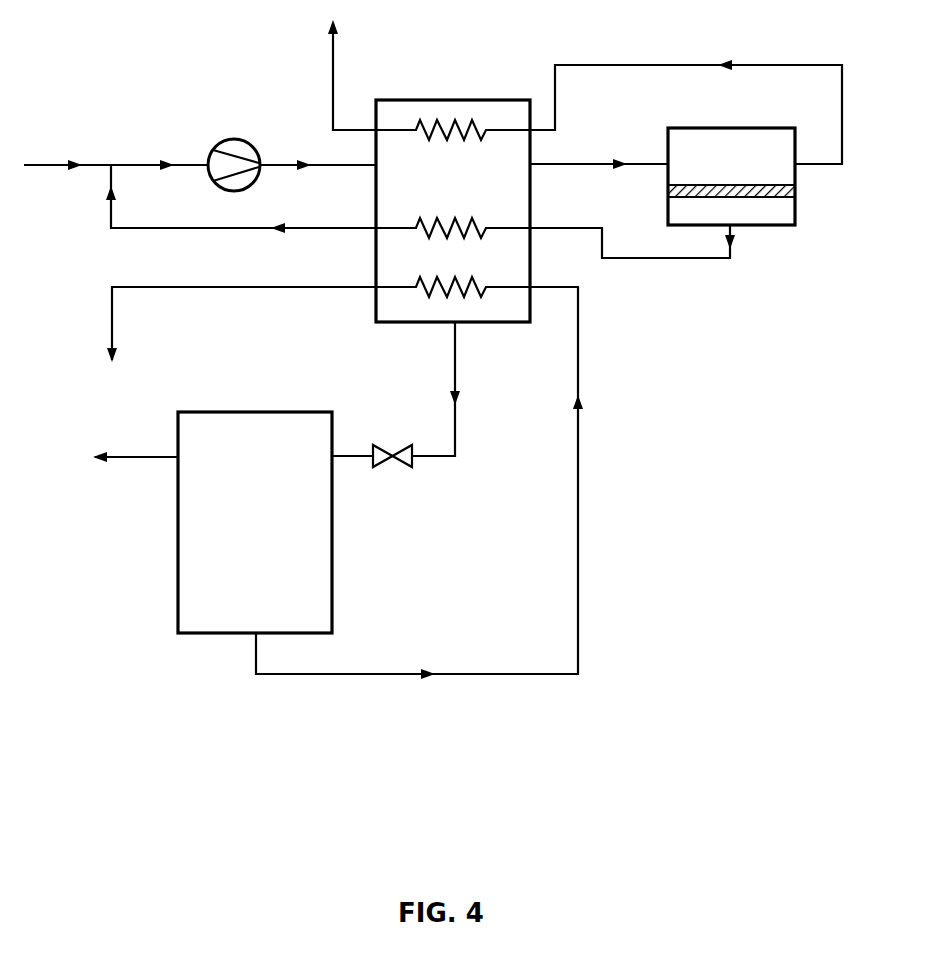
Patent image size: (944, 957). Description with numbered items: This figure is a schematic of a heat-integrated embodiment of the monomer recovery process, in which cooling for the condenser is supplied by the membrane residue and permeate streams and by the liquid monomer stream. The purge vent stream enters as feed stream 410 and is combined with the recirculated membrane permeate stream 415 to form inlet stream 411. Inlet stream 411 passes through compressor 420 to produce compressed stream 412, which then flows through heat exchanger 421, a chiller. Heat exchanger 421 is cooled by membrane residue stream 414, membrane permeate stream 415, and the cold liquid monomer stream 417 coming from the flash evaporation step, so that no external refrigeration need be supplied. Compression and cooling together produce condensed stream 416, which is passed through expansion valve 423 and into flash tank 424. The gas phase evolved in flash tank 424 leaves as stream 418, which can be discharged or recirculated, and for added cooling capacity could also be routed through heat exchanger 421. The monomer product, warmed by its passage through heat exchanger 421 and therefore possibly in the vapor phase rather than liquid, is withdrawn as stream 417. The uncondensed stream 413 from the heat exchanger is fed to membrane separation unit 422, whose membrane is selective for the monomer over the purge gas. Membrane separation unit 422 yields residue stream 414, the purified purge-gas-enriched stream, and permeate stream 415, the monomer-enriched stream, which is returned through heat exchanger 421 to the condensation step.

The feed stream 410 is at (67, 149).
The inlet stream 411 is at (159, 149).
The compressed stream 412 is at (318, 149).
The uncondensed stream 413 is at (599, 147).
The membrane residue stream 414 is at (686, 101).
The membrane permeate stream 415 is at (630, 257).
The condensed stream 416 is at (460, 389).
The liquid monomer stream 417 is at (446, 480).
The evolved gas phase stream 418 is at (111, 460).
The compressor 420 is at (246, 138).
The heat exchanger 421 is at (409, 100).
The membrane separation unit 422 is at (795, 208).
The expansion valve 423 is at (408, 466).
The flash tank 424 is at (178, 626).